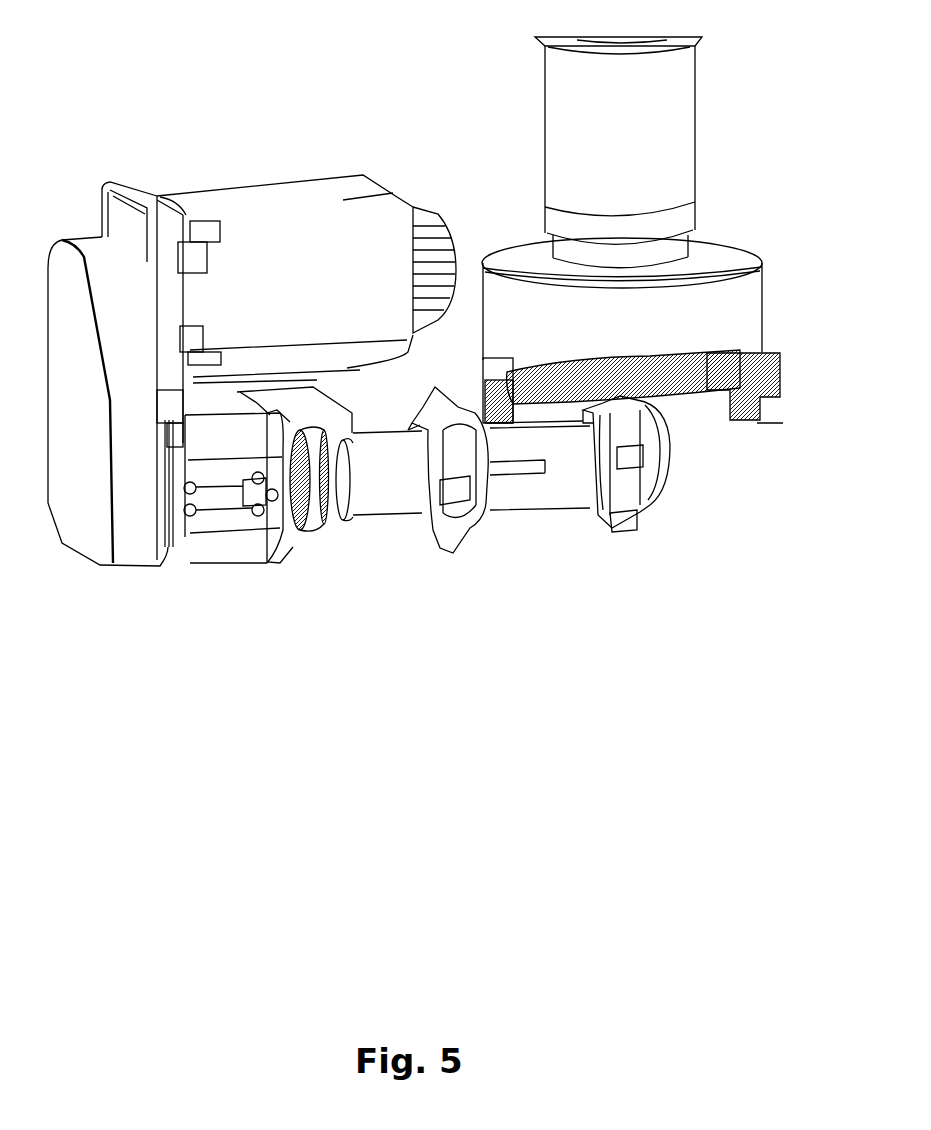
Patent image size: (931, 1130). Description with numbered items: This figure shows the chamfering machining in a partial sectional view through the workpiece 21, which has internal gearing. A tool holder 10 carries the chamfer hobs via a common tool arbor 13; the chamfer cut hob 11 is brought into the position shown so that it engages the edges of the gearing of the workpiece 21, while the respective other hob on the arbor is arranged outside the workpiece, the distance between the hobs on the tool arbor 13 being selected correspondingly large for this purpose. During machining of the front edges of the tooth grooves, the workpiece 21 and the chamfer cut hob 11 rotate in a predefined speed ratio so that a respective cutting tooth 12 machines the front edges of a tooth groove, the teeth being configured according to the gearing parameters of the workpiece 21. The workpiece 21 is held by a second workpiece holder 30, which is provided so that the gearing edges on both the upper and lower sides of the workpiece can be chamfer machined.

The tool holder 10 is at (190, 552).
The chamfer hob 11 is at (455, 468).
The cutting tooth 12 is at (613, 527).
The tool arbor 13 is at (545, 493).
The workpiece 21 is at (740, 397).
The second workpiece holder 30 is at (745, 360).